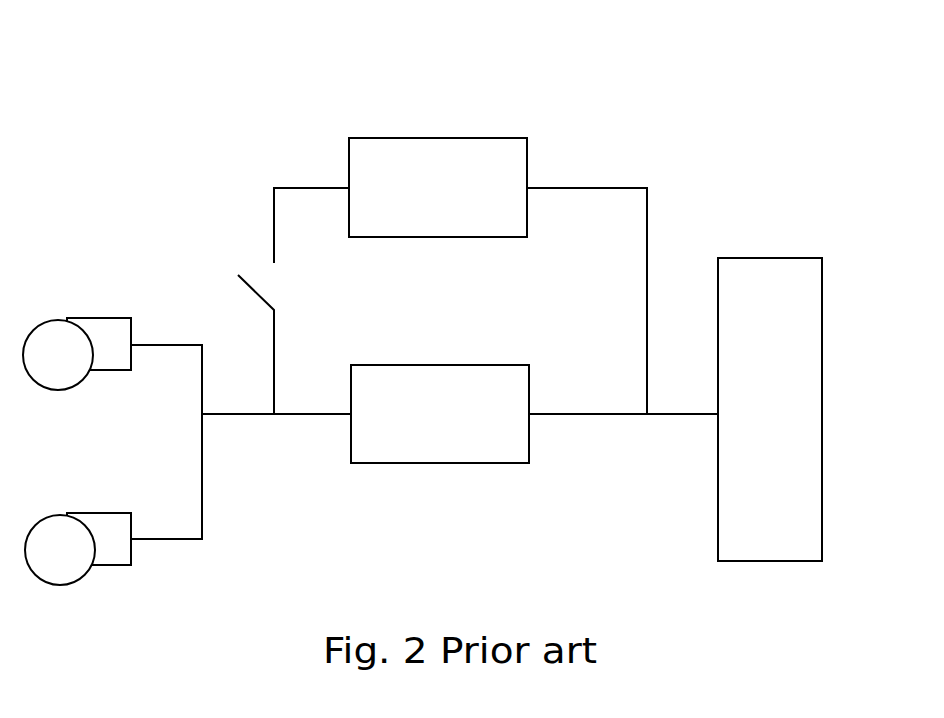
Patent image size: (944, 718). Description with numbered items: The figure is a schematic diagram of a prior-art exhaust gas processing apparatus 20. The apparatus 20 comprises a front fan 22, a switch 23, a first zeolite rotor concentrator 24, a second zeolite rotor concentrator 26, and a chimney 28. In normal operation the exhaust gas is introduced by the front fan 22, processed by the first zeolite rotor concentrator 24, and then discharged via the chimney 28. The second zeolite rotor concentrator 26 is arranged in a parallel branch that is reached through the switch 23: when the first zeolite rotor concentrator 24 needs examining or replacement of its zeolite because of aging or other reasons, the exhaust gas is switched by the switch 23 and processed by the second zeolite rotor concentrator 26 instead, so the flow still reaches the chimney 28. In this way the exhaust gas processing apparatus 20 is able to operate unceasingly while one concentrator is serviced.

The exhaust gas processing apparatus 20 is at (296, 66).
The front fan 22 is at (92, 318).
The switch 23 is at (257, 295).
The first zeolite rotor concentrator 24 is at (433, 463).
The second zeolite rotor concentrator 26 is at (433, 138).
The chimney 28 is at (822, 327).